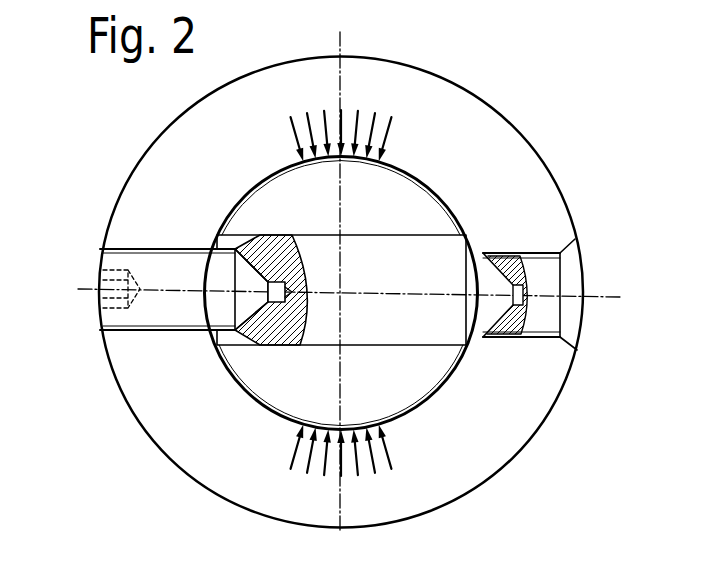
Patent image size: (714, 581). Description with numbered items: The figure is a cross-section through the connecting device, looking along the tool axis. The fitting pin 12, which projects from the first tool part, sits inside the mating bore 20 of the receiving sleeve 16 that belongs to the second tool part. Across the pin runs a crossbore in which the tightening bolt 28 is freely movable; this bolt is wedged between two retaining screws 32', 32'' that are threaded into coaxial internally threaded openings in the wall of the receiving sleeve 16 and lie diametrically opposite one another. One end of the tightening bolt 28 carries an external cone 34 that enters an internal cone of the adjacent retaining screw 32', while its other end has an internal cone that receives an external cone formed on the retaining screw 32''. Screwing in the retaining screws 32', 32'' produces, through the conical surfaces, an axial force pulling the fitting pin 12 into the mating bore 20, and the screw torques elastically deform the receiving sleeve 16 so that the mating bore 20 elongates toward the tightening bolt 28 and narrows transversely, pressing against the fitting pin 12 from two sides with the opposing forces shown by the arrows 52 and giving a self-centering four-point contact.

The fitting pin 12 is at (408, 203).
The receiving sleeve 16 is at (520, 187).
The mating bore 20 is at (470, 233).
The tightening bolt 28 is at (430, 318).
The retaining screw 32' is at (586, 294).
The retaining screw 32'' is at (155, 236).
The external cone 34 is at (483, 308).
The arrows 52 is at (343, 110).